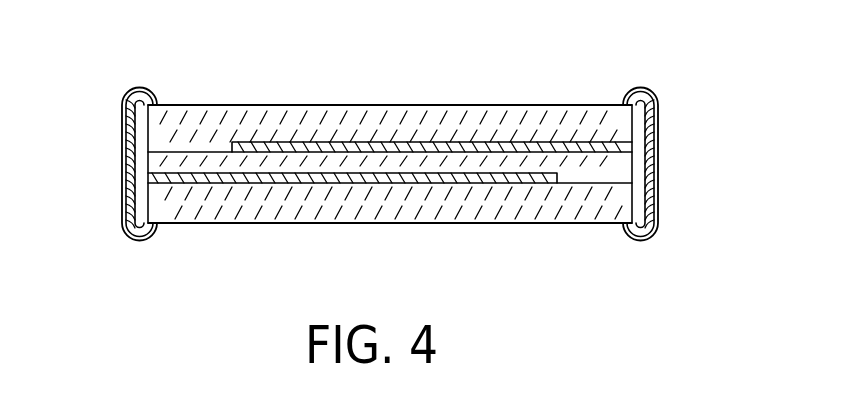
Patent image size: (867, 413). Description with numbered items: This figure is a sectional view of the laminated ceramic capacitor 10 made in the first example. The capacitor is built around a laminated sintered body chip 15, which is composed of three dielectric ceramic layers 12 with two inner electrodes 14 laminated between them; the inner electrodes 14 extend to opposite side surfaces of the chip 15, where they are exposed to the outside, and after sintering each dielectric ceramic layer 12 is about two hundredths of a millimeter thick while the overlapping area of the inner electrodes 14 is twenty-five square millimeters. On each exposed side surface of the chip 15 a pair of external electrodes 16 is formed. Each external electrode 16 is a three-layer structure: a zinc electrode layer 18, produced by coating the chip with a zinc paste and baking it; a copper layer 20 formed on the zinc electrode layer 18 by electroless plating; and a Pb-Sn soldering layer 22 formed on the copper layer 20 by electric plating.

The laminated ceramic capacitor 10 is at (673, 118).
The dielectric ceramic layer 12 is at (362, 148).
The inner electrode 14 is at (493, 183).
The laminated sintered body chip 15 is at (495, 95).
The external electrode 16 is at (122, 157).
The zinc electrode layer 18 is at (147, 200).
The copper layer 20 is at (123, 207).
The Pb-Sn soldering layer 22 is at (123, 191).